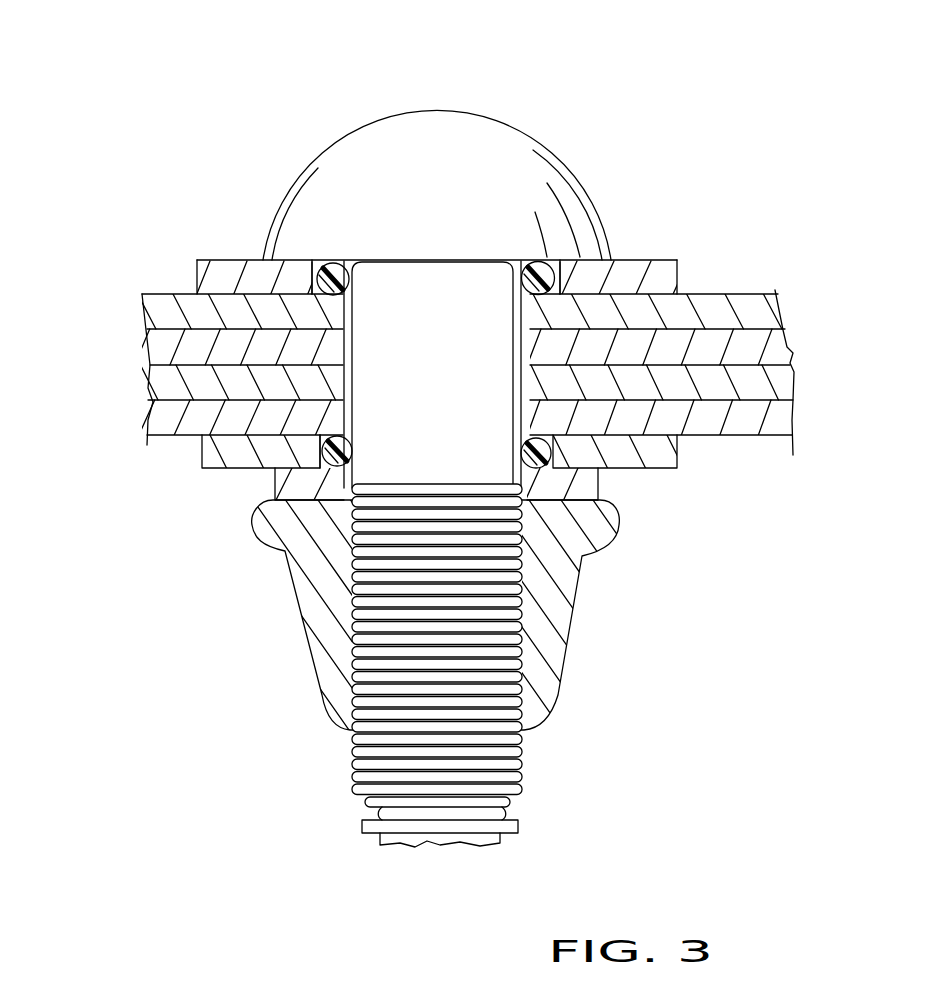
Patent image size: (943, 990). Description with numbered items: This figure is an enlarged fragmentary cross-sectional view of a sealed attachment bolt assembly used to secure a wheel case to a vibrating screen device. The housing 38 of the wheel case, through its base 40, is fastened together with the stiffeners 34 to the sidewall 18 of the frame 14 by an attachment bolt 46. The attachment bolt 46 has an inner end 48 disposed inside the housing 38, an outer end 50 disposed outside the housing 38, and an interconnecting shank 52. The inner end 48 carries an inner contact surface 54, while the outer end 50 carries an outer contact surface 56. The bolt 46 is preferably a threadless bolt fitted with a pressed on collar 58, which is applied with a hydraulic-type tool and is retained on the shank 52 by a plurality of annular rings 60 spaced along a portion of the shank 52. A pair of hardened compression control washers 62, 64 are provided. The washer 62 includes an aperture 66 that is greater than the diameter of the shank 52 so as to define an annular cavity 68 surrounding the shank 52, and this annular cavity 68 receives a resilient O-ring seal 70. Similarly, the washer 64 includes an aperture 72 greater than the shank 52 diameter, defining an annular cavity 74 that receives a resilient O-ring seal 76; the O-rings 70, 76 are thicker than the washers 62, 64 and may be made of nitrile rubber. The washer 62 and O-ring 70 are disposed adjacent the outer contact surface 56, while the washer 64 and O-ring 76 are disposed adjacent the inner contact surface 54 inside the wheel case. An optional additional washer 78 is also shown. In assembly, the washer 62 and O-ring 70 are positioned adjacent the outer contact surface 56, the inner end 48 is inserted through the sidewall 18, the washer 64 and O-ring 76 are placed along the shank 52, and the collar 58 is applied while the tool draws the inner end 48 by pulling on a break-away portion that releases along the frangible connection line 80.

The frame 14 is at (753, 293).
The sidewall 18 is at (717, 312).
The stiffeners 34 is at (757, 347).
The housing 38 is at (767, 438).
The base 40 is at (708, 438).
The attachment bolt 46 is at (604, 153).
The inner end 48 is at (392, 773).
The outer end 50 is at (318, 163).
The shank 52 is at (340, 642).
The inner contact surface 54 is at (597, 500).
The outer contact surface 56 is at (290, 262).
The collar 58 is at (300, 618).
The annular rings 60 is at (457, 557).
The compression control washer 62 is at (233, 262).
The compression control washer 64 is at (198, 456).
The aperture 66 is at (315, 262).
The annular cavity 68 is at (327, 262).
The O-ring seal 70 is at (523, 261).
The aperture 72 is at (328, 462).
The annular cavity 74 is at (330, 447).
The O-ring seal 76 is at (337, 460).
The additional washer 78 is at (588, 488).
The frangible connection line 80 is at (445, 843).